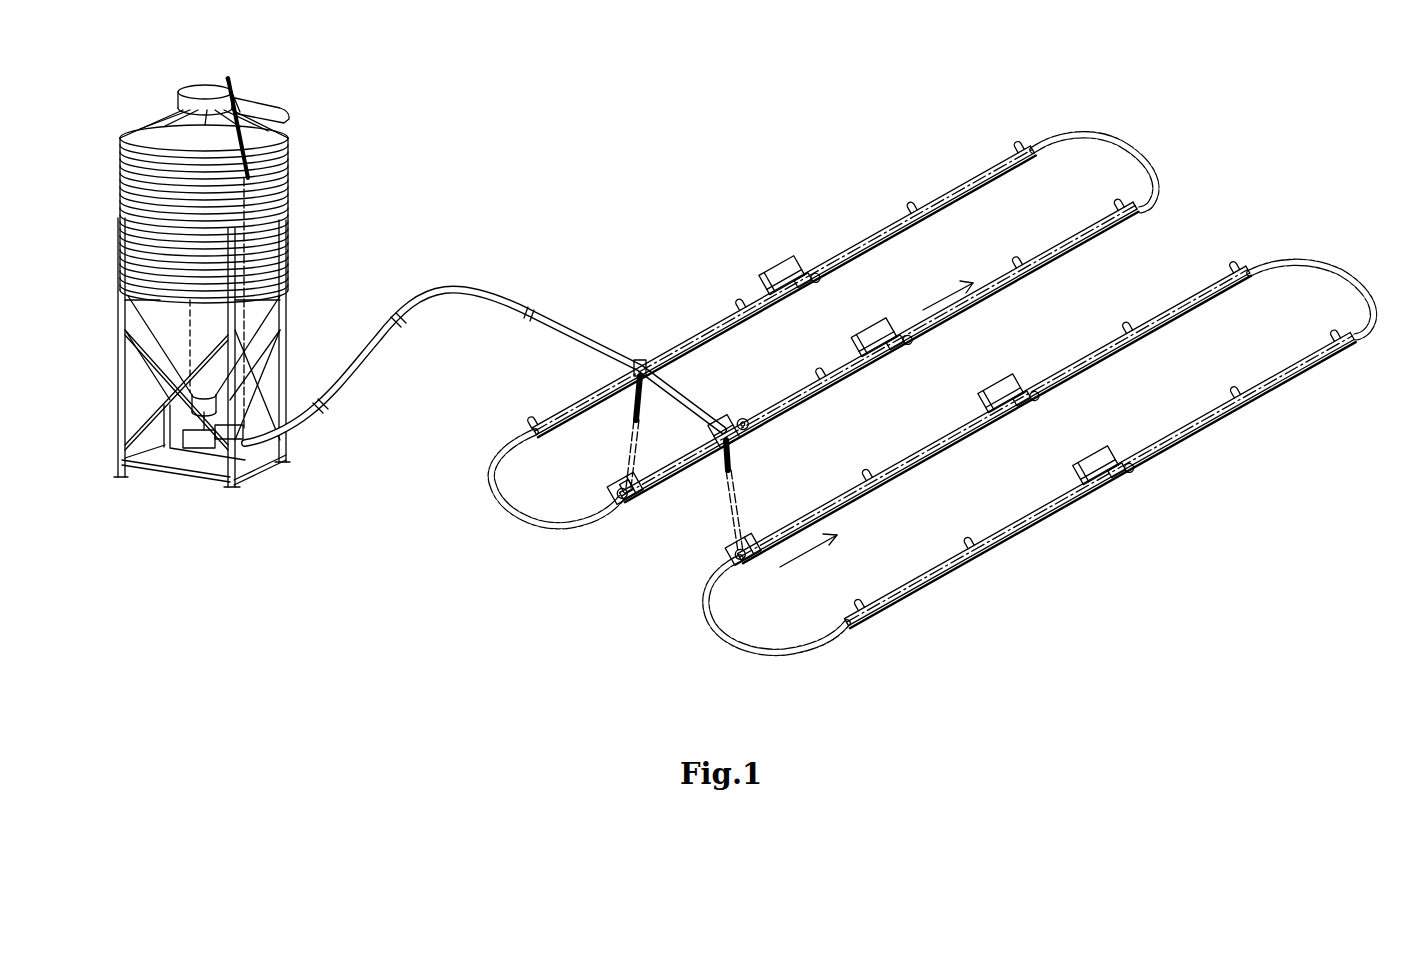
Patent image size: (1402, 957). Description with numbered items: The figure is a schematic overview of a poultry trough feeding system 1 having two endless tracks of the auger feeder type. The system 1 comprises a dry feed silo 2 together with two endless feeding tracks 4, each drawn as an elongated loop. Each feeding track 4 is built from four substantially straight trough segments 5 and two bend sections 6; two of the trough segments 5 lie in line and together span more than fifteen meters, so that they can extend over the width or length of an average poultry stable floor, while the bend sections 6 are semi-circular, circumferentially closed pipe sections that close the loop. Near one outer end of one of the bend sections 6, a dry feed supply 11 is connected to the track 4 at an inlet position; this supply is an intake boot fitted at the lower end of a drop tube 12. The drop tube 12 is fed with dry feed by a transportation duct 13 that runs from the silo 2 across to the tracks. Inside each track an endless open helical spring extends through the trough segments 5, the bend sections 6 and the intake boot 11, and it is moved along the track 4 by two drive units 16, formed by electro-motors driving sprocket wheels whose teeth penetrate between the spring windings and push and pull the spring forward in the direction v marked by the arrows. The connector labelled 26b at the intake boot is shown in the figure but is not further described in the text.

The poultry trough feeding system 1 is at (662, 147).
The dry feed silo 2 is at (284, 180).
The endless feeding track 4 is at (986, 402).
The trough segment 5 is at (716, 318).
The bend section 6 is at (520, 509).
The dry feed supply 11 is at (623, 510).
The drop tube 12 is at (640, 430).
The transportation duct 13 is at (496, 292).
The drive unit 16 is at (783, 278).
The connector 26b is at (635, 478).